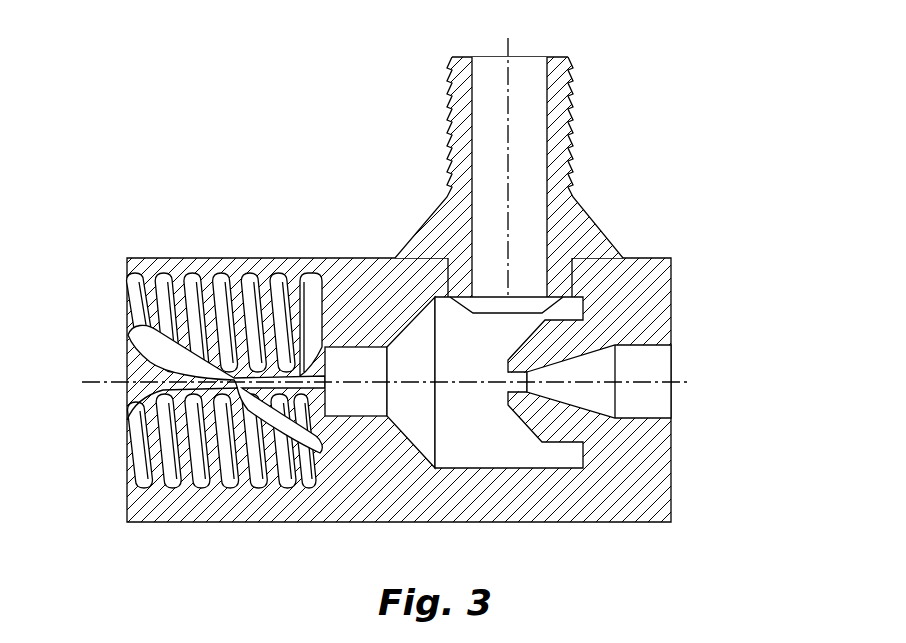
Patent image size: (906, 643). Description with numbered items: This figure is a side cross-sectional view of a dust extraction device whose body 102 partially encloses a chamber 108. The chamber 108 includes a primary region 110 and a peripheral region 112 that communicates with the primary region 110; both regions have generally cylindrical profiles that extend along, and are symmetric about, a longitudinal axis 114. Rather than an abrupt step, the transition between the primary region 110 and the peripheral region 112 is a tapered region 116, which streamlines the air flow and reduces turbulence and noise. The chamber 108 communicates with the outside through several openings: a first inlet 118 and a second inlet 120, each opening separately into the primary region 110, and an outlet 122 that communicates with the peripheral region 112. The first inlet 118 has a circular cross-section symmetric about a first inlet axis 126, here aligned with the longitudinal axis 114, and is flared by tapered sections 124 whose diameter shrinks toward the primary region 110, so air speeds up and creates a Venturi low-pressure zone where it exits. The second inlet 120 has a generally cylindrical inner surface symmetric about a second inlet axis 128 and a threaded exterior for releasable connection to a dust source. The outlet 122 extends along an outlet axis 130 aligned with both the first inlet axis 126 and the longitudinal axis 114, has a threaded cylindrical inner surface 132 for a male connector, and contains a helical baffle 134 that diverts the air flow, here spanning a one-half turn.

The body 102 is at (422, 286).
The chamber 108 is at (425, 436).
The primary region 110 is at (509, 382).
The peripheral region 112 is at (356, 381).
The longitudinal axis 114 is at (655, 454).
The tapered region 116 is at (411, 382).
The first inlet 118 is at (654, 420).
The second inlet 120 is at (487, 73).
The outlet 122 is at (132, 477).
The tapered sections 124 is at (634, 454).
The first inlet axis 126 is at (655, 454).
The second inlet axis 128 is at (510, 52).
The outlet axis 130 is at (93, 384).
The inner surface 132 is at (200, 283).
The baffle 134 is at (147, 343).